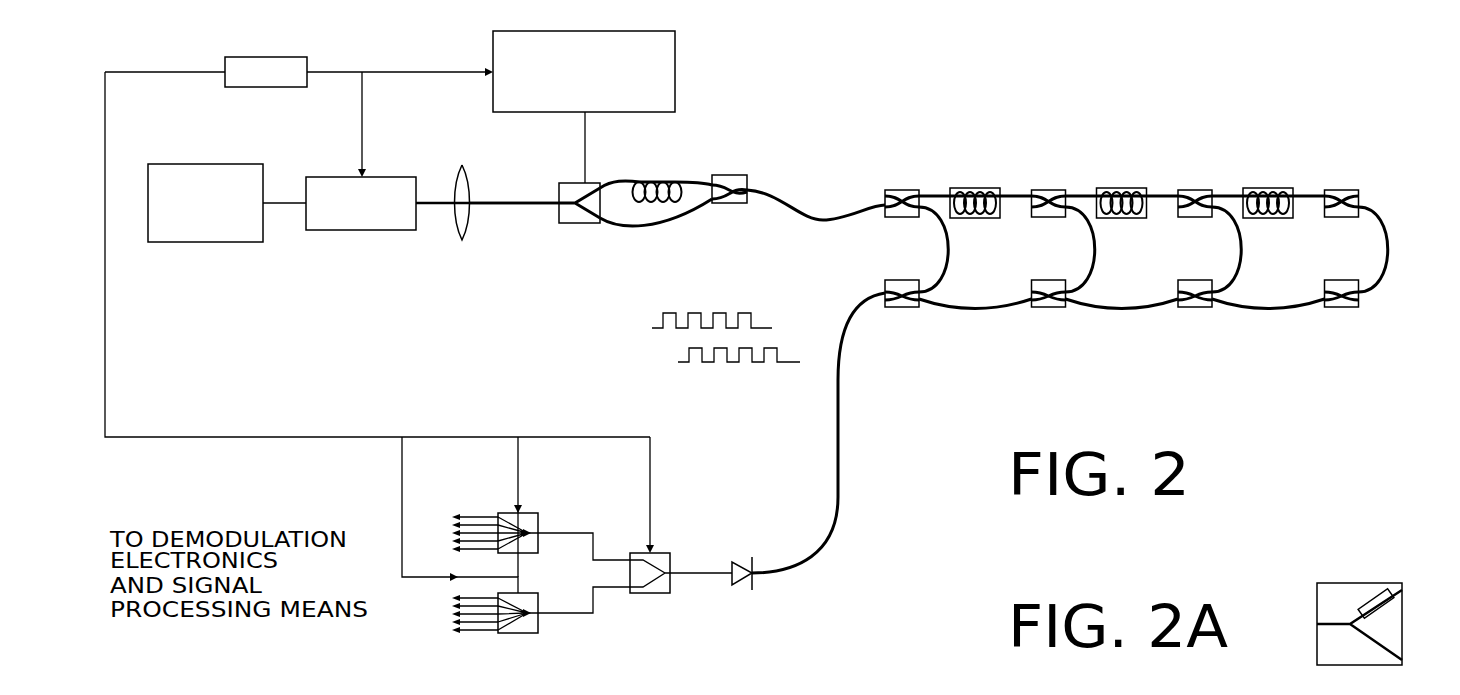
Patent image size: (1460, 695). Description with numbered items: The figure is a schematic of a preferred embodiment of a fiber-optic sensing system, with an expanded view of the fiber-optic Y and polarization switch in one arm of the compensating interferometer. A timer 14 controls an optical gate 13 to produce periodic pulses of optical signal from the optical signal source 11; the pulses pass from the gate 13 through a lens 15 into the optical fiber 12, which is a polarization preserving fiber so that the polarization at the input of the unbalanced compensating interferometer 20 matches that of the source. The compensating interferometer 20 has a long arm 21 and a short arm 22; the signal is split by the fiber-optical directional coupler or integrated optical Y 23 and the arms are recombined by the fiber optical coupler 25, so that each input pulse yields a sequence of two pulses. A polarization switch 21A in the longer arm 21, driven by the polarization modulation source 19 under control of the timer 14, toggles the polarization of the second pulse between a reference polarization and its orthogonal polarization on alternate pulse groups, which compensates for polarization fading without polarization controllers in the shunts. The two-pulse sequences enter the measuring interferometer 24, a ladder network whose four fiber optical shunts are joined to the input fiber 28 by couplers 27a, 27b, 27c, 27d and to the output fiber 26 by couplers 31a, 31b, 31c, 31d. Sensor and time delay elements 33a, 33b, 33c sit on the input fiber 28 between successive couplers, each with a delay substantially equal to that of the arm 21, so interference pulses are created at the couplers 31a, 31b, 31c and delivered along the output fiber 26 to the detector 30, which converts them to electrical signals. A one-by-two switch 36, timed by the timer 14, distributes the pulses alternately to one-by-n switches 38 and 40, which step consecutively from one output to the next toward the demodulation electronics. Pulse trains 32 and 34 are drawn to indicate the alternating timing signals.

In FIG. 2, the optical signal source 11 is at (275, 155).
In FIG. 2, the optical fiber 12 is at (492, 202).
In FIG. 2, the optical gate 13 is at (415, 178).
In FIG. 2, the timer 14 is at (308, 60).
In FIG. 2, the lens 15 is at (467, 227).
In FIG. 2, the polarization modulation source 19 is at (665, 102).
In FIG. 2, the unbalanced compensating interferometer 20 is at (666, 195).
In FIG. 2, the long arm 21 is at (653, 182).
In FIG. 2, the polarization switch 21A is at (590, 183).
In FIG. 2A, the polarization switch 21A is at (1370, 598).
In FIG. 2, the short arm 22 is at (670, 222).
In FIG. 2, the fiber-optical directional coupler or integrated optical Y 23 is at (583, 223).
In FIG. 2, the measuring interferometer 24 is at (1145, 203).
In FIG. 2, the fiber optical coupler 25 is at (740, 202).
In FIG. 2, the output fiber 26 is at (842, 467).
In FIG. 2, the coupler 27a is at (897, 195).
In FIG. 2, the coupler 27b is at (1050, 195).
In FIG. 2, the coupler 27c is at (1207, 195).
In FIG. 2, the coupler 27d is at (1355, 193).
In FIG. 2, the input fiber 28 is at (853, 213).
In FIG. 2, the detector 30 is at (758, 582).
In FIG. 2, the coupler 31a is at (912, 303).
In FIG. 2, the coupler 31b is at (1062, 303).
In FIG. 2, the coupler 31c is at (1208, 303).
In FIG. 2, the coupler 31d is at (1353, 303).
In FIG. 2, the pulse train 32 is at (642, 319).
In FIG. 2, the sensor and time delay element 33a is at (973, 195).
In FIG. 2, the sensor and time delay element 33b is at (1120, 195).
In FIG. 2, the sensor and time delay element 33c is at (1278, 196).
In FIG. 2, the pulse train 34 is at (669, 353).
In FIG. 2, the 1×2 switch 36 is at (665, 590).
In FIG. 2, the 1×n switch 38 is at (508, 517).
In FIG. 2, the 1×n switch 40 is at (533, 627).